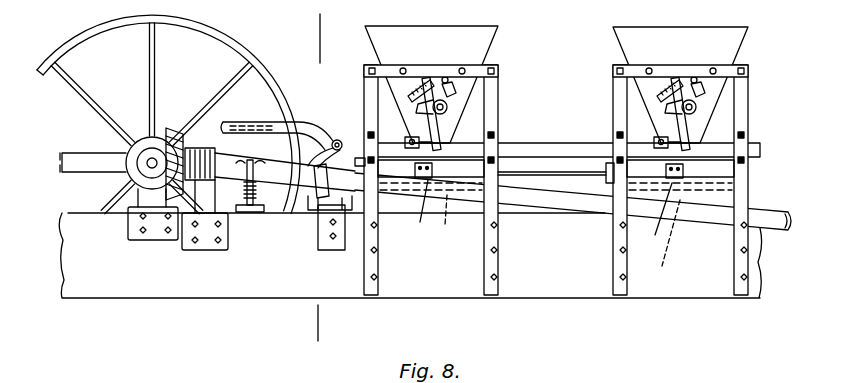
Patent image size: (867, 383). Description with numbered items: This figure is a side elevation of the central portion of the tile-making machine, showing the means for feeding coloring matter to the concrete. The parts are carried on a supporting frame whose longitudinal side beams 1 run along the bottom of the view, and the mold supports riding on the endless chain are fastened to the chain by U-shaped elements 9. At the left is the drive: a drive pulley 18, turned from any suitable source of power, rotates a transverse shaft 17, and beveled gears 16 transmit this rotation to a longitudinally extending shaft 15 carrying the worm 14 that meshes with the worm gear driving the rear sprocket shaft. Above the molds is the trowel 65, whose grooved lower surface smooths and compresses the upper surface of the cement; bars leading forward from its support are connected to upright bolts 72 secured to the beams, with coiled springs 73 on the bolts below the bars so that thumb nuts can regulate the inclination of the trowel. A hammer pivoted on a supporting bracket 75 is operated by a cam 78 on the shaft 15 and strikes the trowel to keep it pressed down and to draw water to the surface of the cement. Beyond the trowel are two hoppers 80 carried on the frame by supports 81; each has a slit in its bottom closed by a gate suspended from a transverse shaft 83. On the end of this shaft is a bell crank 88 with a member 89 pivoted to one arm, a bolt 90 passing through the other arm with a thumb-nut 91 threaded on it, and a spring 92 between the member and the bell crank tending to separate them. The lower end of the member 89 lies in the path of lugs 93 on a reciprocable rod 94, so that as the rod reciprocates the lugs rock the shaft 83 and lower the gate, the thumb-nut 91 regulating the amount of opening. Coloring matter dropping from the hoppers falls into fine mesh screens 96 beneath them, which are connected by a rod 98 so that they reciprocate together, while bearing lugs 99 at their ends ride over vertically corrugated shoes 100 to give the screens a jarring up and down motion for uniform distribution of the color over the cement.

The longitudinal side beam 1 is at (563, 300).
The U-shaped element 9 is at (312, 40).
The worm 14 is at (262, 172).
The longitudinally extending shaft 15 is at (690, 226).
The beveled gears 16 is at (170, 135).
The transverse shaft 17 is at (150, 165).
The drive pulley 18 is at (226, 45).
The trowel 65 is at (312, 206).
The upright bolt 72 is at (246, 195).
The coiled spring 73 is at (257, 195).
The supporting bracket 75 is at (330, 246).
The cam 78 is at (328, 181).
The hopper 80 is at (433, 32).
The support 81 is at (498, 114).
The shaft 83 is at (448, 107).
The bell crank 88 is at (444, 100).
The member 89 is at (438, 135).
The bolt 90 is at (450, 80).
The thumb-nut 91 is at (338, 140).
The spring 92 is at (422, 82).
The lug 93 is at (412, 144).
The reciprocable rod 94 is at (316, 121).
The fine mesh screen 96 is at (556, 175).
The rod 98 is at (582, 172).
The bearing lug 99 is at (540, 215).
The vertically corrugated shoe 100 is at (557, 238).